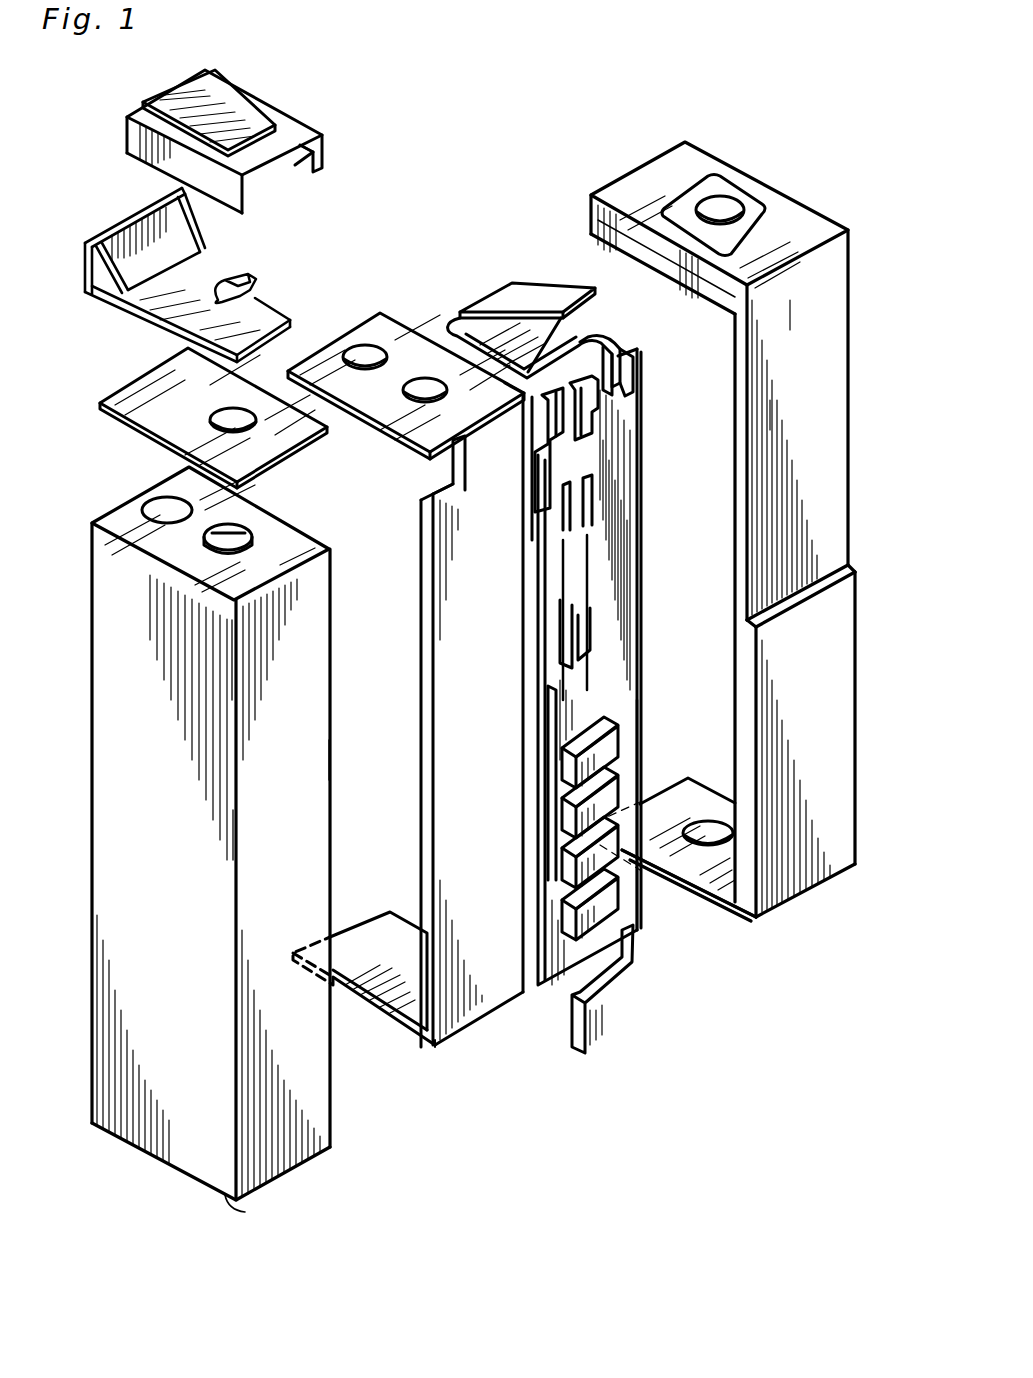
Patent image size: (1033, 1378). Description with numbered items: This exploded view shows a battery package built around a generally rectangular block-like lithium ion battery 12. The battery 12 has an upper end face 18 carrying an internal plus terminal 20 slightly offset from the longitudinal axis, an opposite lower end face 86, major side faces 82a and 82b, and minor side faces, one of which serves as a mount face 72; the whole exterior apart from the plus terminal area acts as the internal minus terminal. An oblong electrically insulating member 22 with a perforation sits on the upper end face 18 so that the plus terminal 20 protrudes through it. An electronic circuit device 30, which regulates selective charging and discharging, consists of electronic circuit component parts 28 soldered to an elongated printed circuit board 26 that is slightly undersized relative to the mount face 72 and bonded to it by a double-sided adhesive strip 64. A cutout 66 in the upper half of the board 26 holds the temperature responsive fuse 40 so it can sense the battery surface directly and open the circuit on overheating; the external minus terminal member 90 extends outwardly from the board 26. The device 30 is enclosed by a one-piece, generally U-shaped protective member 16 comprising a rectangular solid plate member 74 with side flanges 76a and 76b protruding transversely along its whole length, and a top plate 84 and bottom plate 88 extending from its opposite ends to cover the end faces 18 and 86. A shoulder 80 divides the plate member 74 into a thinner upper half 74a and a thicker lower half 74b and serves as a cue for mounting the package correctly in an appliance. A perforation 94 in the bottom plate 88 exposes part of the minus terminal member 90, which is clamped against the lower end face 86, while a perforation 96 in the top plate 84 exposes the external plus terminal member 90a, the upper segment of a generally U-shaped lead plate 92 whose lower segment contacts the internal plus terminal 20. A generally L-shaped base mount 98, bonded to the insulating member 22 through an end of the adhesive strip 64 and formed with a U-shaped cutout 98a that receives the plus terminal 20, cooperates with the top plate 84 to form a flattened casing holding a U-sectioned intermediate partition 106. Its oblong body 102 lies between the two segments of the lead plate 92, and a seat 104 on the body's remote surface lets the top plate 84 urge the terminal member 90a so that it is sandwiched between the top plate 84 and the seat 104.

The battery 12 is at (80, 955).
The protective member 16 is at (818, 202).
The upper end face 18 is at (130, 517).
The internal plus terminal 20 is at (240, 537).
The electrically insulating member 22 is at (290, 433).
The printed circuit board 26 is at (626, 512).
The electronic circuit component parts 28 is at (612, 740).
The electronic circuit device 30 is at (665, 608).
The temperature responsive fuse 40 is at (545, 585).
The double-sided adhesive strip 64 is at (455, 1045).
The cutout 66 is at (590, 622).
The mount face 72 is at (258, 680).
The solid plate member 74 is at (822, 498).
The upper half 74a is at (772, 430).
The lower half 74b is at (823, 862).
The side flange 76a is at (740, 708).
The side flange 76b is at (846, 285).
The shoulder 80 is at (780, 612).
The major side face 82a is at (218, 830).
The major side face 82b is at (332, 728).
The top plate 84 is at (630, 190).
The lower end face 86 is at (225, 1195).
The bottom plate 88 is at (662, 870).
The external minus terminal member 90 is at (610, 1035).
The external plus terminal member 90a is at (527, 292).
The lead plate 92 is at (604, 340).
The perforation 94 is at (712, 848).
The perforation 96 is at (700, 180).
The base mount 98 is at (250, 272).
The U-shaped cutout 98a is at (180, 320).
The oblong body 102 is at (318, 140).
The seat 104 is at (245, 112).
The intermediate partition 106 is at (282, 188).